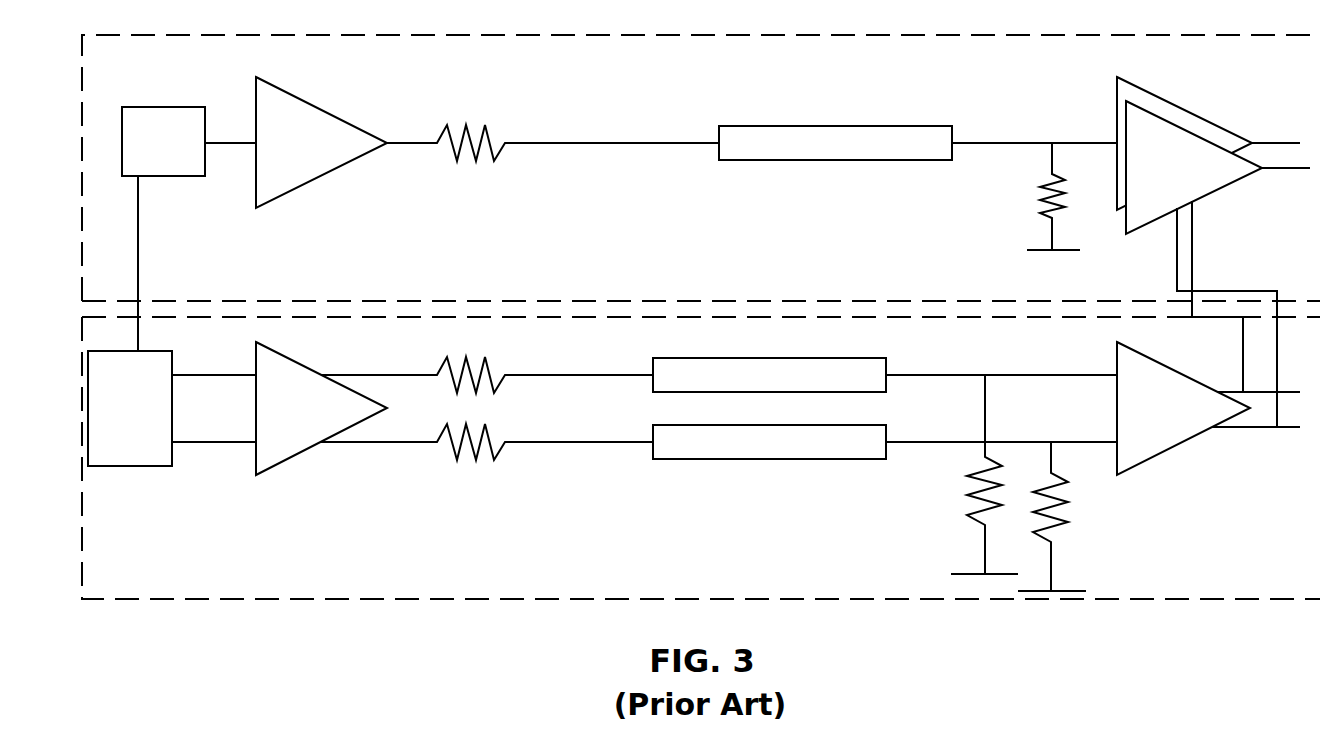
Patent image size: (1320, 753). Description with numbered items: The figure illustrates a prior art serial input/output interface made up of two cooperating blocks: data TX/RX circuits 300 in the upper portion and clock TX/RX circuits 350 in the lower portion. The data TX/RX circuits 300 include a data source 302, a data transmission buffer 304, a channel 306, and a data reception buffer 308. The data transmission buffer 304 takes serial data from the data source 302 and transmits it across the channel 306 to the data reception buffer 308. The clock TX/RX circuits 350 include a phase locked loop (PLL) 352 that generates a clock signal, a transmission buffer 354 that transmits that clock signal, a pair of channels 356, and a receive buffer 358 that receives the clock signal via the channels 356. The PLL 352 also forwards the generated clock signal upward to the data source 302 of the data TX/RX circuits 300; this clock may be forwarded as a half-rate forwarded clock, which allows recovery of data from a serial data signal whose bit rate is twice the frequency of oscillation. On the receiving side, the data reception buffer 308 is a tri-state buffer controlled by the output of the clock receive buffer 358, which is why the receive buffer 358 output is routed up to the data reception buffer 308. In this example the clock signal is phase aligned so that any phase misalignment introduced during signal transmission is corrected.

The data TX/RX circuits 300 is at (1239, 71).
The data source 302 is at (189, 229).
The data transmission buffer 304 is at (487, 142).
The channel 306 is at (918, 188).
The data reception buffer 308 is at (1213, 252).
The clock TX/RX circuits 350 is at (1239, 576).
The phase locked loop (PLL) 352 is at (172, 408).
The transmission buffer 354 is at (454, 408).
The channels 356 is at (885, 474).
The receive buffer 358 is at (1208, 408).